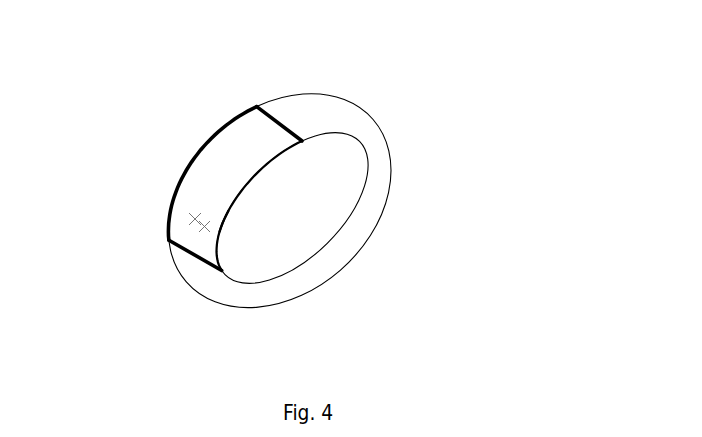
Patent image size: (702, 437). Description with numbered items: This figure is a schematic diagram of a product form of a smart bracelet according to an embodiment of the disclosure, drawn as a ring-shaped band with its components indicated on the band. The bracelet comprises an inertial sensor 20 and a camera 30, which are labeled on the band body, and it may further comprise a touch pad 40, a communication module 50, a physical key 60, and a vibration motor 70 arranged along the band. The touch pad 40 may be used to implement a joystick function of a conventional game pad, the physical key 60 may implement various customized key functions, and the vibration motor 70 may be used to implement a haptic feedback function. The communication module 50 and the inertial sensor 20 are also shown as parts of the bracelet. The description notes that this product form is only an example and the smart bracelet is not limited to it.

The inertial sensor 20 is at (247, 160).
The camera 30 is at (194, 158).
The touch pad 40 is at (200, 237).
The communication module 50 is at (268, 112).
The physical key 60 is at (233, 201).
The vibration motor 70 is at (223, 222).